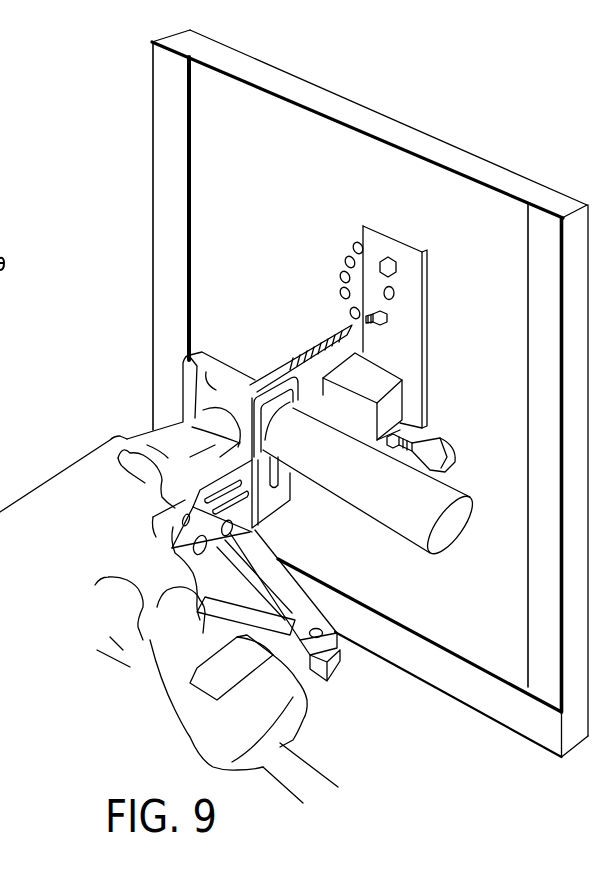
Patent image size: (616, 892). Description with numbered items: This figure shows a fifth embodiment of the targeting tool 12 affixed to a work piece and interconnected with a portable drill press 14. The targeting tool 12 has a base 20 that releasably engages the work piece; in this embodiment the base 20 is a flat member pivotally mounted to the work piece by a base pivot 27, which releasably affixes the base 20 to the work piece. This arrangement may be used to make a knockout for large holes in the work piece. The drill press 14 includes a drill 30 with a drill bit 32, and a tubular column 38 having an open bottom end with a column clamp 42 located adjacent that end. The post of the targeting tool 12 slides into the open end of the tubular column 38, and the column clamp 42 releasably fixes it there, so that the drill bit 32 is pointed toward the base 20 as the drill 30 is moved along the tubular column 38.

The targeting tool 12 is at (416, 333).
The portable drill press 14 is at (128, 426).
The base 20 is at (413, 292).
The base pivot 27 is at (392, 318).
The drill 30 is at (75, 488).
The drill bit 32 is at (300, 350).
The tubular column 38 is at (300, 487).
The column clamp 42 is at (457, 463).